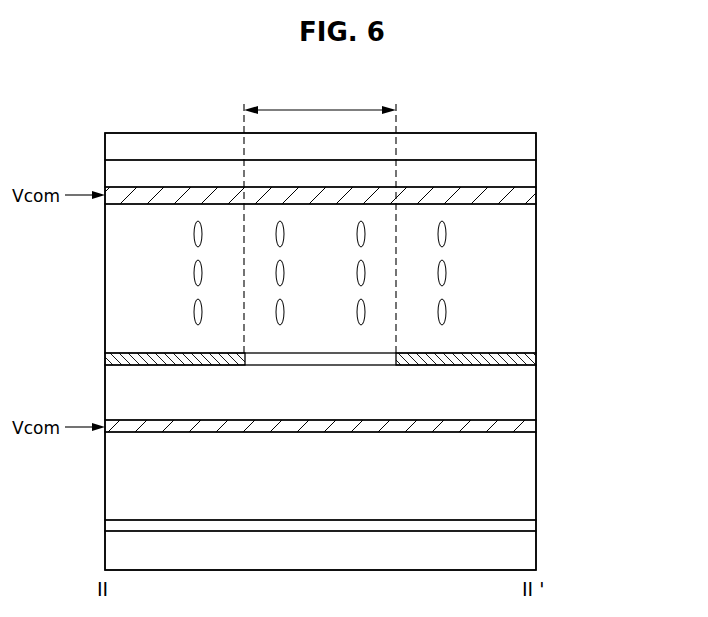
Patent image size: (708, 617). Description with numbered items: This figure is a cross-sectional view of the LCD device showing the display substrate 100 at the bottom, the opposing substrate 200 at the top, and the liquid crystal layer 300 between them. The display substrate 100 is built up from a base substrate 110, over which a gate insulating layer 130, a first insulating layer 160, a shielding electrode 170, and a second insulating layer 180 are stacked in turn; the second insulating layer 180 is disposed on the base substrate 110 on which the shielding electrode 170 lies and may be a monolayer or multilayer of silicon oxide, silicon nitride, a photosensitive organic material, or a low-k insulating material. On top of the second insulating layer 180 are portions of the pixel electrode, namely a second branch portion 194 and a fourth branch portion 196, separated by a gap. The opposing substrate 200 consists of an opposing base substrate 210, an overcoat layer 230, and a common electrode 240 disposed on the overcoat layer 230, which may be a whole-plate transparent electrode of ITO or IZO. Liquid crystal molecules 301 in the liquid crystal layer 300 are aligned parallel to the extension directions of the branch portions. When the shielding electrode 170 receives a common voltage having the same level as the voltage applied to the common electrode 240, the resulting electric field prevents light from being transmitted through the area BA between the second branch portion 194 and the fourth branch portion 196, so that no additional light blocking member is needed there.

The display substrate 100 is at (389, 467).
The base substrate 110 is at (356, 550).
The gate insulating layer 130 is at (520, 525).
The first insulating layer 160 is at (520, 474).
The shielding electrode 170 is at (524, 427).
The second insulating layer 180 is at (520, 391).
The second branch portion 194 is at (506, 355).
The fourth branch portion 196 is at (135, 354).
The opposing substrate 200 is at (389, 170).
The opposing base substrate 210 is at (517, 146).
The overcoat layer 230 is at (518, 172).
The common electrode 240 is at (520, 198).
The liquid crystal layer 300 is at (356, 222).
The liquid crystal molecules 301 is at (441, 221).
The area BA is at (320, 220).